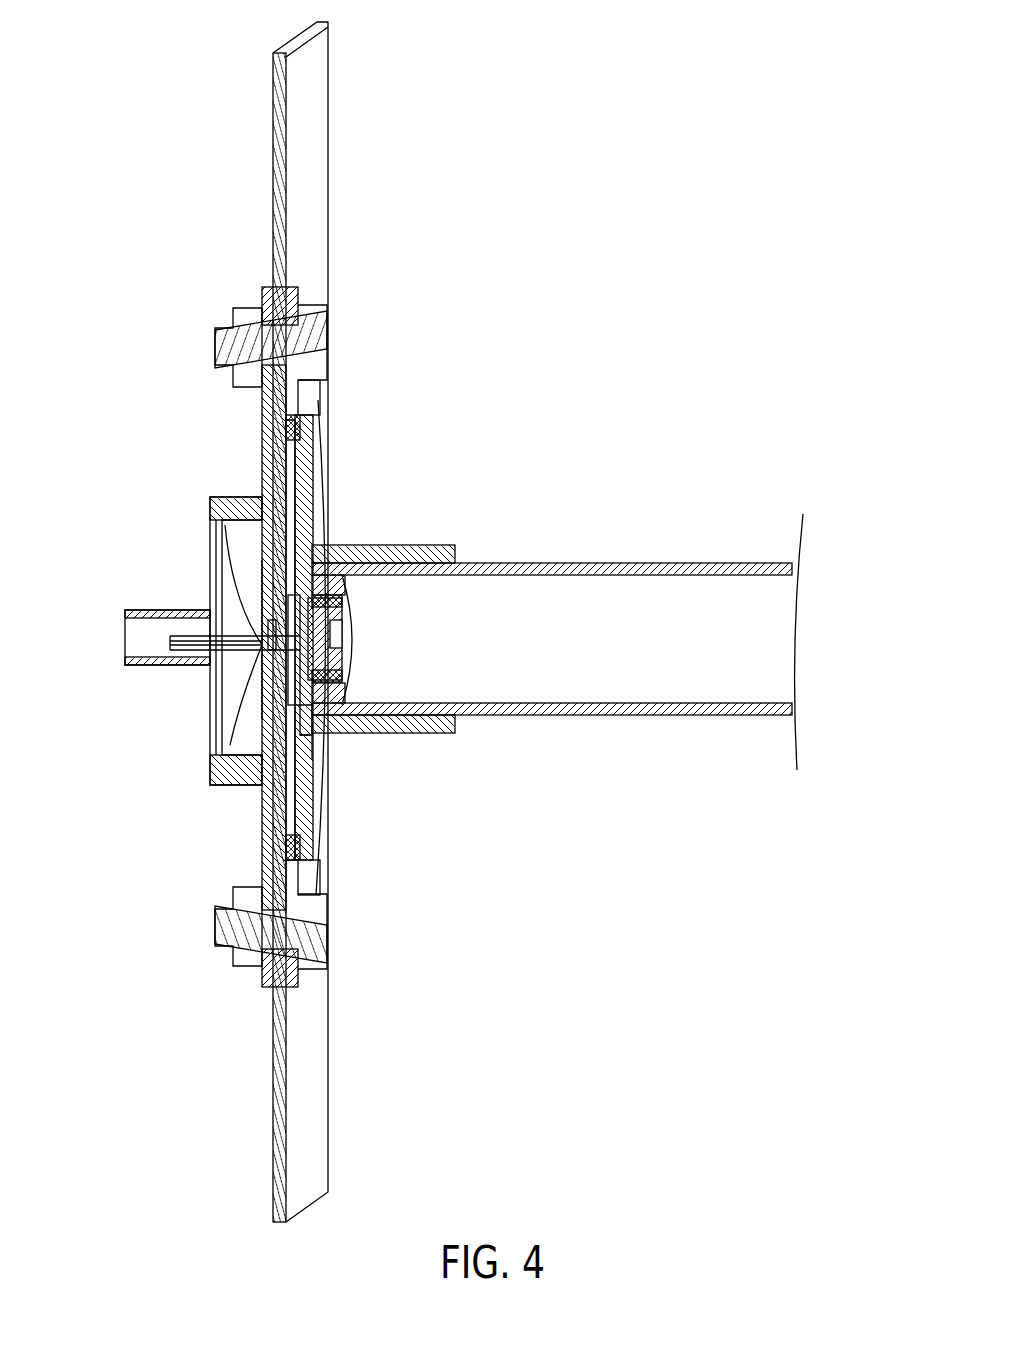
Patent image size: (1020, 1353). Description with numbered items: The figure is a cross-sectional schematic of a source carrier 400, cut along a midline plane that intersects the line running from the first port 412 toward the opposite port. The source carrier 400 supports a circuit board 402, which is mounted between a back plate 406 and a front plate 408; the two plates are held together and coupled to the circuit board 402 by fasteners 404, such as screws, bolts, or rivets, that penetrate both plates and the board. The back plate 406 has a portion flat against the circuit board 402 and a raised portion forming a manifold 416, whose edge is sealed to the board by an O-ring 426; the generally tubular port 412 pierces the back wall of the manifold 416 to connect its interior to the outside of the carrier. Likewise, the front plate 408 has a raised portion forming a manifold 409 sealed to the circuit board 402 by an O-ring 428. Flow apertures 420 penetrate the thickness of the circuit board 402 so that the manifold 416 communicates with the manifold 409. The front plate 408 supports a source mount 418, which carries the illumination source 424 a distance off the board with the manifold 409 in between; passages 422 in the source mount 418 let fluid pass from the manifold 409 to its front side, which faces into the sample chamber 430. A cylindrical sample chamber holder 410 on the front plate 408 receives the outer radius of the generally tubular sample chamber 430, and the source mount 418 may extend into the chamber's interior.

The source carrier 400 is at (637, 255).
The circuit board 402 is at (318, 95).
The fasteners 404 is at (214, 345).
The back plate 406 is at (262, 415).
The front plate 408 is at (318, 508).
The manifold 409 is at (325, 748).
The sample chamber holder 410 is at (343, 548).
The first port 412 is at (140, 610).
The manifold 416 is at (233, 722).
The source mount 418 is at (322, 722).
The flow apertures 420 is at (228, 540).
The passages 422 is at (345, 660).
The illumination source 424 is at (340, 688).
The O-ring 426 is at (262, 490).
The O-ring 428 is at (305, 420).
The sample chamber 430 is at (555, 562).